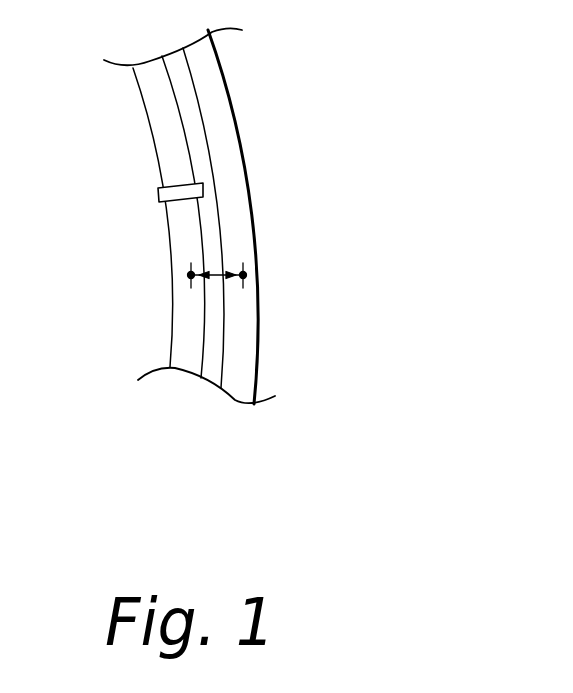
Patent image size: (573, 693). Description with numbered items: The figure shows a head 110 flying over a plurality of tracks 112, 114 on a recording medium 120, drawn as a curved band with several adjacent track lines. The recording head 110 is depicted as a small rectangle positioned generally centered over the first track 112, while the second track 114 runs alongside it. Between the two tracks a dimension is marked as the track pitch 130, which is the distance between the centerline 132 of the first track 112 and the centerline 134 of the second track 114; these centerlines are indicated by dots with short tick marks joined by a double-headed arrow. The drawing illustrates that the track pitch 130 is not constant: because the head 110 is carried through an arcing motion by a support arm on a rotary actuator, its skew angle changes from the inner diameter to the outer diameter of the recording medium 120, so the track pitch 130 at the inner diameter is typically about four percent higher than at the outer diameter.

The head 110 is at (158, 196).
The first track 112 is at (148, 97).
The second track 114 is at (212, 72).
The recording medium 120 is at (268, 134).
The track pitch 130 is at (220, 273).
The centerline of the first track 132 is at (191, 275).
The centerline of the second track 134 is at (243, 275).